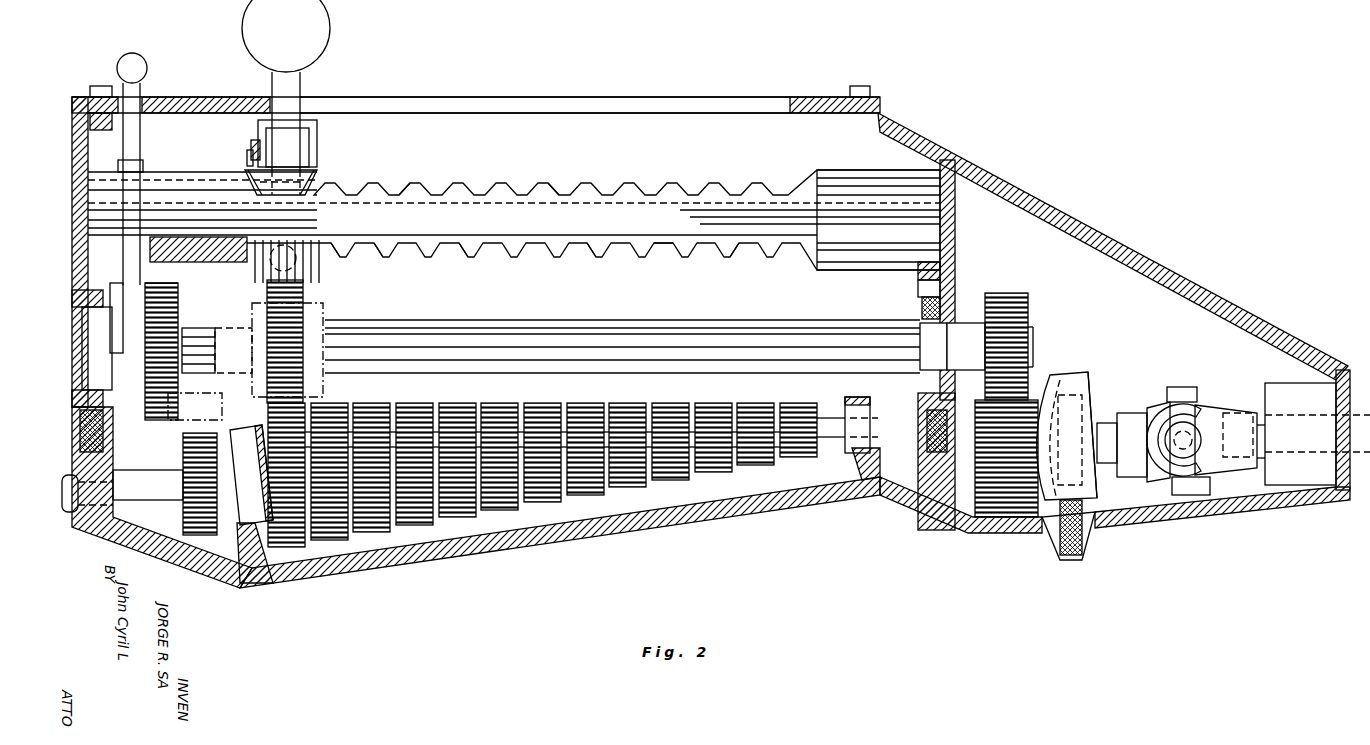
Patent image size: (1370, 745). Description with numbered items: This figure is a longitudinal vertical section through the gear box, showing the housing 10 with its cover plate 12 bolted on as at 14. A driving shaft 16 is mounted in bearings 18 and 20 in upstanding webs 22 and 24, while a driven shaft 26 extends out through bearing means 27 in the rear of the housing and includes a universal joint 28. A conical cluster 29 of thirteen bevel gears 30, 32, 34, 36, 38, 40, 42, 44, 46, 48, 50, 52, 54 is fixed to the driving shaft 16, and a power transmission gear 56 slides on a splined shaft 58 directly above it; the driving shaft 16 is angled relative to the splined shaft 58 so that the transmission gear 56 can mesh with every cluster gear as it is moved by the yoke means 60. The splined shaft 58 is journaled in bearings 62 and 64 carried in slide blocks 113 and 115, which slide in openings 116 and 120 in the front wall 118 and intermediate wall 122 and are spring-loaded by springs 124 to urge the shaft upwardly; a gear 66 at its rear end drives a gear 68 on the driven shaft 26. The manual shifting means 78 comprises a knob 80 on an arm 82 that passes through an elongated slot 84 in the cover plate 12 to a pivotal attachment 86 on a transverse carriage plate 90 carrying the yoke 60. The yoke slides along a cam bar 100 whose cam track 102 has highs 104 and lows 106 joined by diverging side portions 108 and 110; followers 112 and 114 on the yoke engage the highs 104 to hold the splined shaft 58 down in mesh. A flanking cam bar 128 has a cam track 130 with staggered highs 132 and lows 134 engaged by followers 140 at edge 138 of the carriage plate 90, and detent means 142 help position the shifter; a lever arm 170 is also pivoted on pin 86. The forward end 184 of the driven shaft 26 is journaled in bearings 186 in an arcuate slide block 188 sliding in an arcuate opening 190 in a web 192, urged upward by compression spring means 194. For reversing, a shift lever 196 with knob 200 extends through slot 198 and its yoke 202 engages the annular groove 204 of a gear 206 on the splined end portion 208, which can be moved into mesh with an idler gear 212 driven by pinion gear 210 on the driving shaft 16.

The housing 10 is at (912, 136).
The cover plate 12 is at (822, 97).
The bolts 14 is at (862, 86).
The driving shaft 16 is at (162, 502).
The bearing 18 is at (244, 528).
The bearing 20 is at (850, 440).
The upstanding web 22 is at (238, 580).
The upstanding web 24 is at (852, 398).
The driven shaft 26 is at (1360, 378).
The bearing means 27 is at (1317, 434).
The universal joint 28 is at (1196, 392).
The conical cluster 29 is at (556, 469).
The bevel gear 30 is at (286, 482).
The bevel gear 32 is at (329, 476).
The bevel gear 34 is at (371, 473).
The bevel gear 36 is at (414, 469).
The bevel gear 38 is at (457, 466).
The bevel gear 40 is at (499, 462).
The bevel gear 42 is at (542, 459).
The bevel gear 44 is at (585, 455).
The bevel gear 46 is at (627, 452).
The bevel gear 48 is at (670, 449).
The bevel gear 50 is at (713, 445).
The bevel gear 52 is at (755, 442).
The bevel gear 54 is at (798, 438).
The power transmission gear 56 is at (322, 392).
The splined shaft 58 is at (586, 326).
The yoke means 60 is at (322, 302).
The bearing 62 is at (92, 348).
The bearing 64 is at (952, 346).
The gear 66 is at (1016, 293).
The gear 68 is at (950, 526).
The manual shifting means 78 is at (326, 62).
The knob 80 is at (286, 36).
The arm 82 is at (300, 88).
The elongated slot 84 is at (556, 97).
The pivotal attachment 86 is at (247, 156).
The transverse carriage plate 90 is at (317, 150).
The cam bar 100 is at (810, 258).
The cam track 102 is at (548, 254).
The highs 104 is at (450, 254).
The lows 106 is at (586, 254).
The side portion 108 is at (404, 262).
The side portion 110 is at (414, 262).
The transverse follower 112 is at (322, 276).
The slide block 113 is at (118, 400).
The transverse follower 114 is at (296, 262).
The slide block 115 is at (928, 300).
The opening 116 is at (162, 284).
The front wall 118 is at (72, 110).
The opening 120 is at (945, 282).
The intermediate wall 122 is at (950, 252).
The springs 124 is at (103, 430).
The cam bar 128 is at (514, 217).
The cam track 130 is at (440, 178).
The highs 132 is at (552, 182).
The lows 134 is at (482, 190).
The edge 138 is at (318, 170).
The followers 140 is at (250, 172).
The detent means 142 is at (317, 132).
The lever arm 170 is at (251, 146).
The forward end 184 is at (1104, 422).
The bearings 186 is at (1100, 482).
The arcuate slide block 188 is at (1100, 382).
The arcuate opening 190 is at (1064, 385).
The web 192 is at (1070, 372).
The compression spring means 194 is at (1060, 540).
The shift lever 196 is at (140, 142).
The slot 198 is at (178, 105).
The knob 200 is at (147, 66).
The yoke 202 is at (178, 310).
The annular groove 204 is at (232, 356).
The gear 206 is at (186, 328).
The splined end portion 208 is at (220, 459).
The pinion gear 210 is at (192, 520).
The idler gear 212 is at (112, 488).